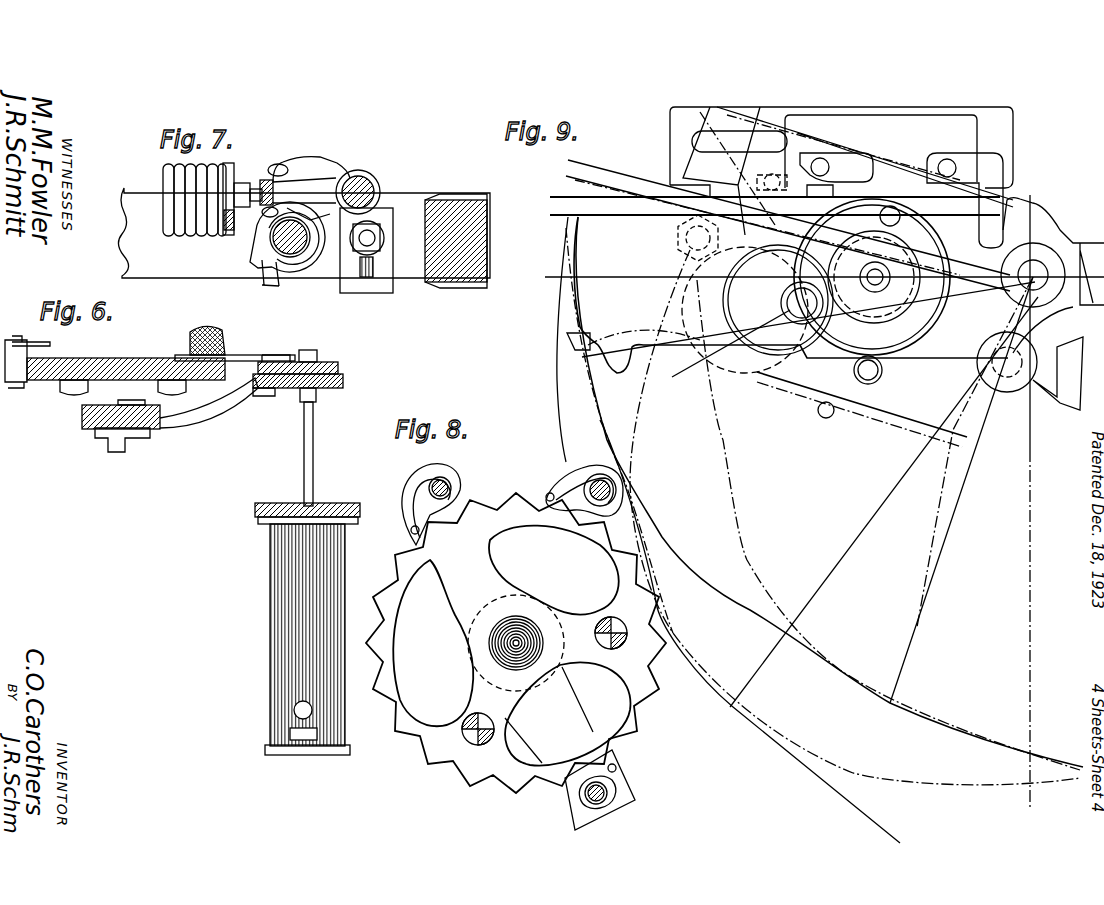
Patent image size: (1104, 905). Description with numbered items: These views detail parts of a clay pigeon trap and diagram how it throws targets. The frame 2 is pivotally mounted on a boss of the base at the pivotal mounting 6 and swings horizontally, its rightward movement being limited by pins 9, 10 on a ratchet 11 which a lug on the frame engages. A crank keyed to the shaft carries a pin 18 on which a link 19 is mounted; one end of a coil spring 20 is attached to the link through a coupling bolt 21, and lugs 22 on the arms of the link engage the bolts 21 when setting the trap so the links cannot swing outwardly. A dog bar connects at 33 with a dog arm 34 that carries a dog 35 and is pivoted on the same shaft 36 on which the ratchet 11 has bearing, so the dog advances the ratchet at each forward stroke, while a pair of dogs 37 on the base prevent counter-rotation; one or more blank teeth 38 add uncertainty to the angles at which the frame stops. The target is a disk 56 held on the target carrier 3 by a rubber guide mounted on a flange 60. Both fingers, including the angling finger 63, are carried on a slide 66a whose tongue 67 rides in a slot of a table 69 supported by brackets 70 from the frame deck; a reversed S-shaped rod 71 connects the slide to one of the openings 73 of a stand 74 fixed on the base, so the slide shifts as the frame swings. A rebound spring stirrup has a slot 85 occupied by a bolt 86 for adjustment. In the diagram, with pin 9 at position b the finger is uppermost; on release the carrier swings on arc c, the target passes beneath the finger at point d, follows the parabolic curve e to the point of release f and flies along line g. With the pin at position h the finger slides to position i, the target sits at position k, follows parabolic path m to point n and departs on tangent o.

In FIG. 7, the frame 2 is at (438, 274).
In FIG. 9, the frame 2 is at (1068, 352).
In FIG. 6, the target carrier 3 is at (45, 380).
In FIG. 9, the target carrier 3 is at (1003, 227).
In FIG. 9, the pivotal mounting 6 is at (686, 238).
In FIG. 8, the pin 9 is at (618, 630).
In FIG. 8, the pin 10 is at (473, 736).
In FIG. 8, the ratchet 11 is at (400, 712).
In FIG. 7, the pin 18 is at (364, 178).
In FIG. 7, the link 19 is at (326, 170).
In FIG. 7, the coil spring 20 is at (196, 222).
In FIG. 7, the coupling bolt 21 is at (266, 180).
In FIG. 7, the lugs 22 is at (287, 157).
In FIG. 8, the connection 33 is at (565, 778).
In FIG. 8, the dog arm 34 is at (560, 695).
In FIG. 8, the dog 35 is at (620, 775).
In FIG. 8, the shaft 36 is at (505, 641).
In FIG. 8, the dogs 37 is at (568, 470).
In FIG. 8, the blank teeth 38 is at (393, 577).
In FIG. 9, the disk 56 is at (920, 323).
In FIG. 6, the flange 60 is at (228, 350).
In FIG. 9, the angling finger 63 is at (794, 302).
In FIG. 6, the slide 66a is at (330, 364).
In FIG. 6, the tongue 67 is at (298, 390).
In FIG. 6, the table 69 is at (343, 385).
In FIG. 6, the brackets 70 is at (225, 405).
In FIG. 6, the reversed S-shaped rod 71 is at (314, 458).
In FIG. 6, the openings 73 is at (280, 503).
In FIG. 6, the stand 74 is at (258, 520).
In FIG. 7, the slot 85 is at (366, 277).
In FIG. 7, the bolt 86 is at (372, 230).
In FIG. 9, the position b is at (943, 260).
In FIG. 9, the arc c is at (663, 536).
In FIG. 9, the point d is at (789, 333).
In FIG. 9, the parabolic curve e is at (734, 505).
In FIG. 9, the point of release f is at (890, 703).
In FIG. 9, the line g is at (998, 737).
In FIG. 9, the position h is at (903, 323).
In FIG. 9, the position i is at (745, 242).
In FIG. 9, the position k is at (726, 298).
In FIG. 9, the point l is at (725, 352).
In FIG. 9, the parabolic path m is at (640, 458).
In FIG. 9, the point n is at (730, 708).
In FIG. 9, the tangent o is at (823, 783).